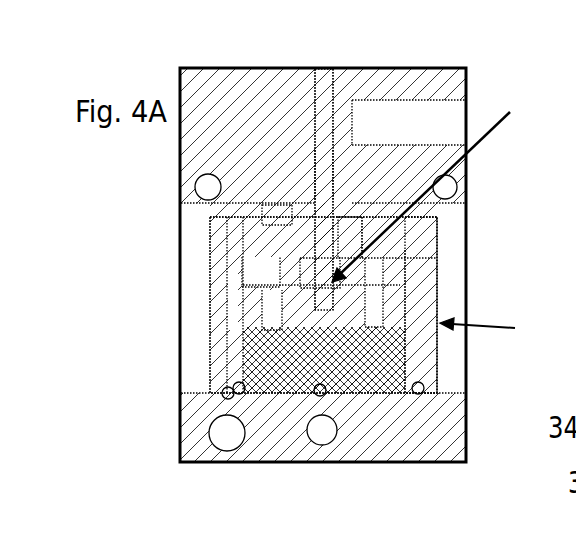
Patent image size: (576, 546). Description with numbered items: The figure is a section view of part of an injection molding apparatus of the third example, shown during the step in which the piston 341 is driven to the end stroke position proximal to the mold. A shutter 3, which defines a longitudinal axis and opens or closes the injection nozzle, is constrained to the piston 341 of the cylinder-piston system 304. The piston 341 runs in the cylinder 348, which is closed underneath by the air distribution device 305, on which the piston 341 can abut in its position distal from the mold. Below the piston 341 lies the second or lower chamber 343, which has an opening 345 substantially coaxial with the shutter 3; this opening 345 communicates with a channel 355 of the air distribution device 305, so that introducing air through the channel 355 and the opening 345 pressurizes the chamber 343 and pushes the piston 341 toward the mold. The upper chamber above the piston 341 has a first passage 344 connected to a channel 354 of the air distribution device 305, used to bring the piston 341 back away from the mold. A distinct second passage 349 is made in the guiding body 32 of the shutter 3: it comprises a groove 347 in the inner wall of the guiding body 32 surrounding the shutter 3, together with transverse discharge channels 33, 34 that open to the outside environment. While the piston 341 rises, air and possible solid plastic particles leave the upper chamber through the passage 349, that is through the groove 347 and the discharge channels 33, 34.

The shutter 3 is at (320, 172).
The guiding body 32 is at (306, 152).
The discharge channel 33 is at (277, 215).
The discharge channel 34 is at (342, 232).
The cylinder-piston system 304 is at (501, 321).
The air distribution device 305 is at (448, 463).
The piston 341 is at (265, 340).
The second chamber 343 is at (258, 367).
The first passage 344 is at (228, 393).
The opening 345 is at (325, 395).
The groove 347 is at (313, 273).
The cylinder 348 is at (422, 297).
The second passage 349 is at (447, 187).
The channel 354 is at (228, 433).
The channel 355 is at (322, 432).